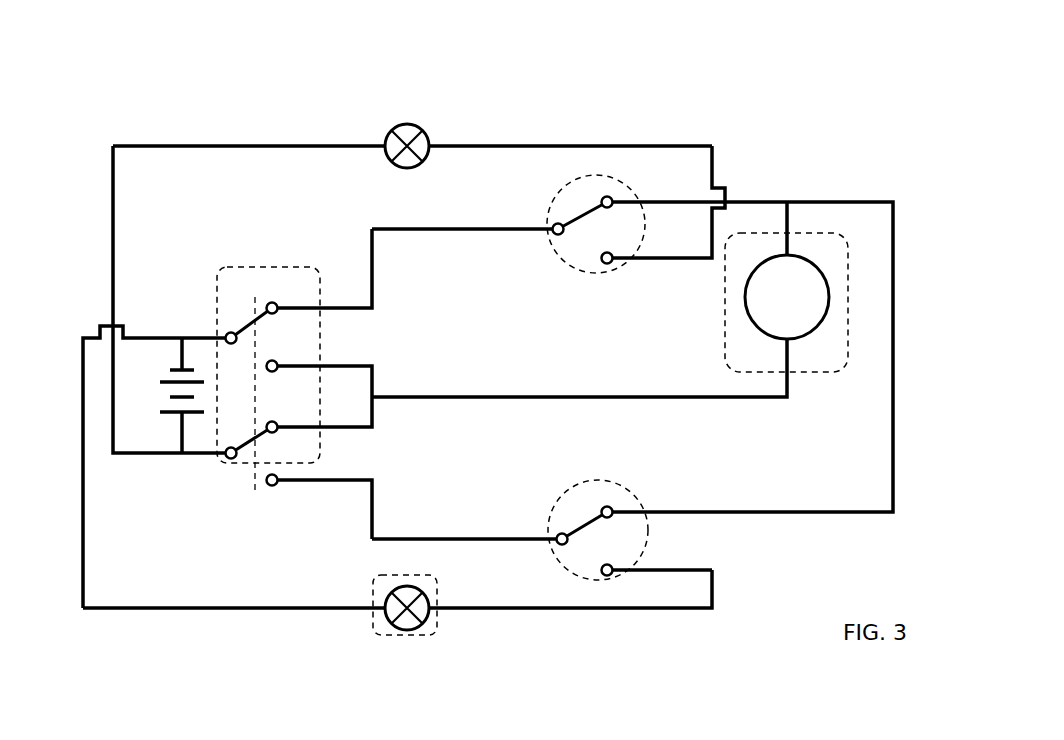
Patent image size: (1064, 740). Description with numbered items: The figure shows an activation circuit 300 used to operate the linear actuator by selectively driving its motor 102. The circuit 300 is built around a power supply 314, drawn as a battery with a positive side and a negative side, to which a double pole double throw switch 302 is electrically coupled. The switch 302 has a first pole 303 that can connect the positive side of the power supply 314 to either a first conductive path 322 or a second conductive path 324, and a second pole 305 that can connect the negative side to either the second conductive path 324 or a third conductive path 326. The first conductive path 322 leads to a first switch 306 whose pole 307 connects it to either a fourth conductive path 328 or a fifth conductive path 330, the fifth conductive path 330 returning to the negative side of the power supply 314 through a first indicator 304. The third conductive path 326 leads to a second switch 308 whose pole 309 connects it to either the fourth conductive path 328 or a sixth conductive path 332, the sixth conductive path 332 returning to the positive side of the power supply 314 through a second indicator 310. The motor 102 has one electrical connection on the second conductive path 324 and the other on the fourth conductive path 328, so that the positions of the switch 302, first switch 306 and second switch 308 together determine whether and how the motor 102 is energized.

The activation circuit 300 is at (968, 129).
The double pole double throw (DPDT) switch 302 is at (250, 363).
The first pole 303 is at (257, 317).
The first indicator 304 is at (427, 120).
The second pole 305 is at (253, 443).
The first switch 306 is at (592, 175).
The pole 307 is at (582, 218).
The second switch 308 is at (592, 578).
The pole 309 is at (615, 560).
The second indicator 310 is at (437, 627).
The power supply 314 is at (180, 433).
The first conductive path 322 is at (463, 230).
The second conductive path 324 is at (537, 392).
The third conductive path 326 is at (480, 535).
The fourth conductive path 328 is at (850, 198).
The fifth conductive path 330 is at (518, 140).
The sixth conductive path 332 is at (242, 612).
The motor 102 is at (848, 312).